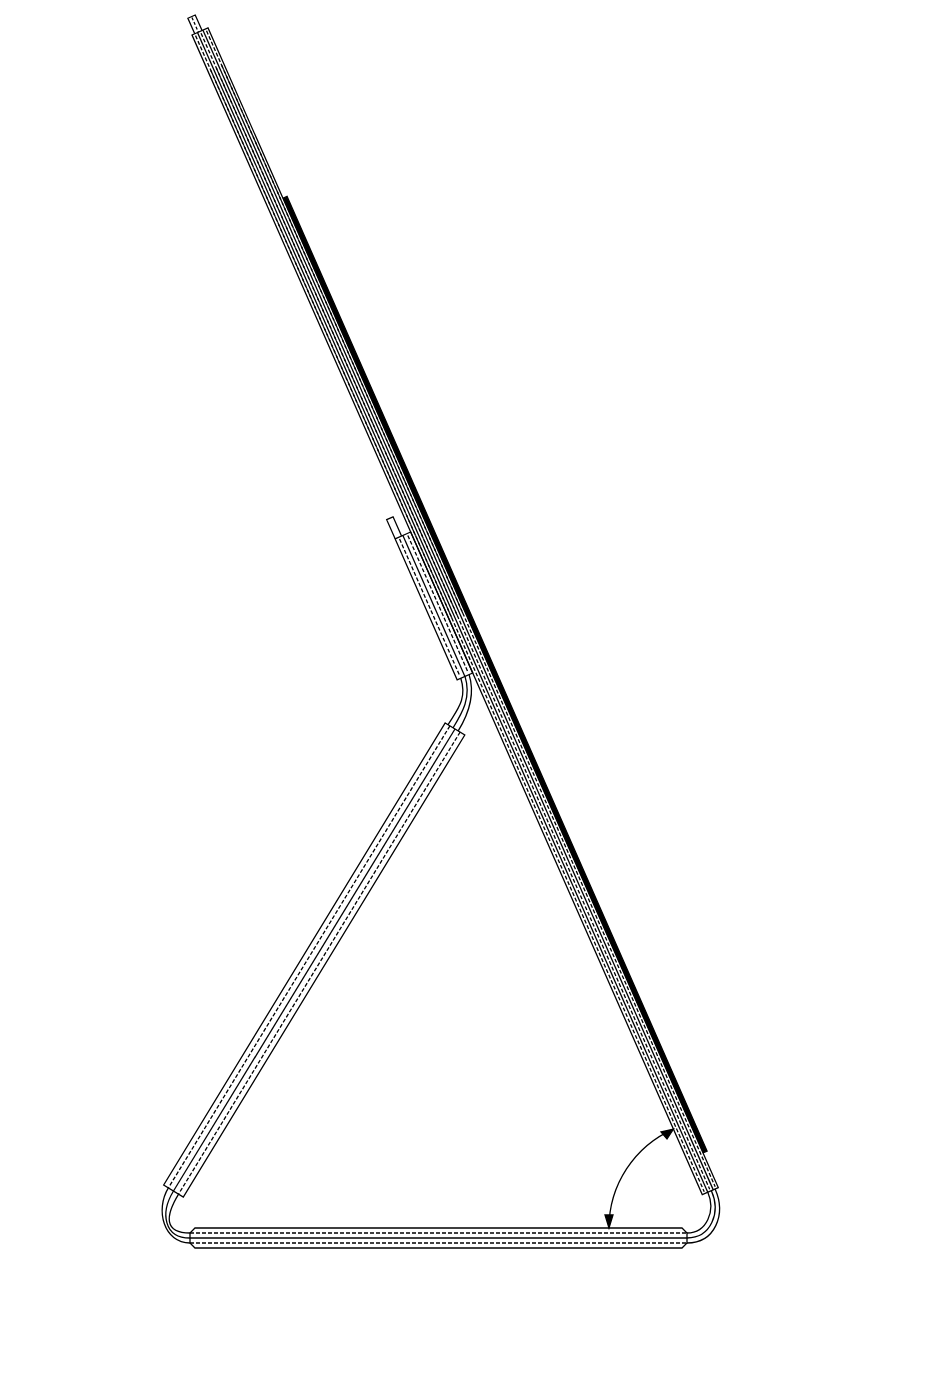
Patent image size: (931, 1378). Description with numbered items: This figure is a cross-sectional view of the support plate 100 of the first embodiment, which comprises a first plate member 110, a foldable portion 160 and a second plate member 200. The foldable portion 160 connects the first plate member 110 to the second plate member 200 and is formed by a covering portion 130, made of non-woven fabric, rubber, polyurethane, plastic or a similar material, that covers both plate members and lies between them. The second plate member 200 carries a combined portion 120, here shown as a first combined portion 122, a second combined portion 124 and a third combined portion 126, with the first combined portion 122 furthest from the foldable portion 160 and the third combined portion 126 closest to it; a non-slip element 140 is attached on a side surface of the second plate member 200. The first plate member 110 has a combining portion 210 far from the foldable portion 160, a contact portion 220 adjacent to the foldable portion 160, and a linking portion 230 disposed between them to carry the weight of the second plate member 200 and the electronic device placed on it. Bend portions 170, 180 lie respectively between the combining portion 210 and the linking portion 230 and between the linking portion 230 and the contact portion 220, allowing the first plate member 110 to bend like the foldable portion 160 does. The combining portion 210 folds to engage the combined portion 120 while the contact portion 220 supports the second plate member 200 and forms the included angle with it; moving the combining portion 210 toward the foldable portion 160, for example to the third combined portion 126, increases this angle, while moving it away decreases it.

The support plate 100 is at (455, 34).
The first plate member 110 is at (418, 880).
The combined portion 120 is at (460, 603).
The first combined portion 122 is at (232, 98).
The second combined portion 124 is at (392, 408).
The third combined portion 126 is at (442, 563).
The covering portion 130 is at (198, 25).
The non-slip element 140 is at (334, 310).
The foldable portion 160 is at (722, 1222).
The bend portion 170 is at (470, 718).
The bend portion 180 is at (155, 1228).
The second plate member 200 is at (440, 880).
The combining portion 210 is at (437, 640).
The contact portion 220 is at (426, 1124).
The linking portion 230 is at (338, 900).